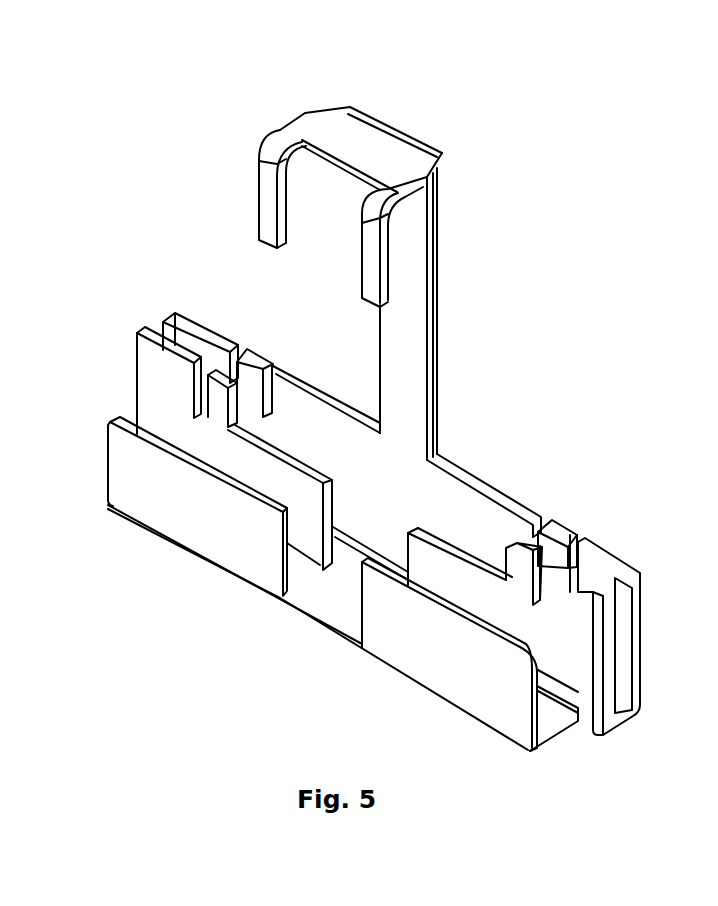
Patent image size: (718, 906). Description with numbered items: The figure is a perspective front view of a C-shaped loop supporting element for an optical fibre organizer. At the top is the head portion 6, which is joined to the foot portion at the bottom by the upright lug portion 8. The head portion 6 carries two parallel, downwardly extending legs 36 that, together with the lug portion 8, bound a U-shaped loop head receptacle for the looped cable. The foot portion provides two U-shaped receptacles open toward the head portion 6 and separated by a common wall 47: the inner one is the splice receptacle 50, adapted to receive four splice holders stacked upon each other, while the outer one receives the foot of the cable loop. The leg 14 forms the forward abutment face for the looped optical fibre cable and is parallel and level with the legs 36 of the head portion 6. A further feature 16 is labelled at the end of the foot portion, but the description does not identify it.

The head portion 6 is at (271, 150).
The leg 36 is at (268, 202).
The lug portion 8 is at (418, 330).
The common wall 47 is at (292, 488).
The leg 14 is at (390, 644).
The splice receptacle 50 is at (591, 571).
The channel opening / end frame 16 is at (541, 647).